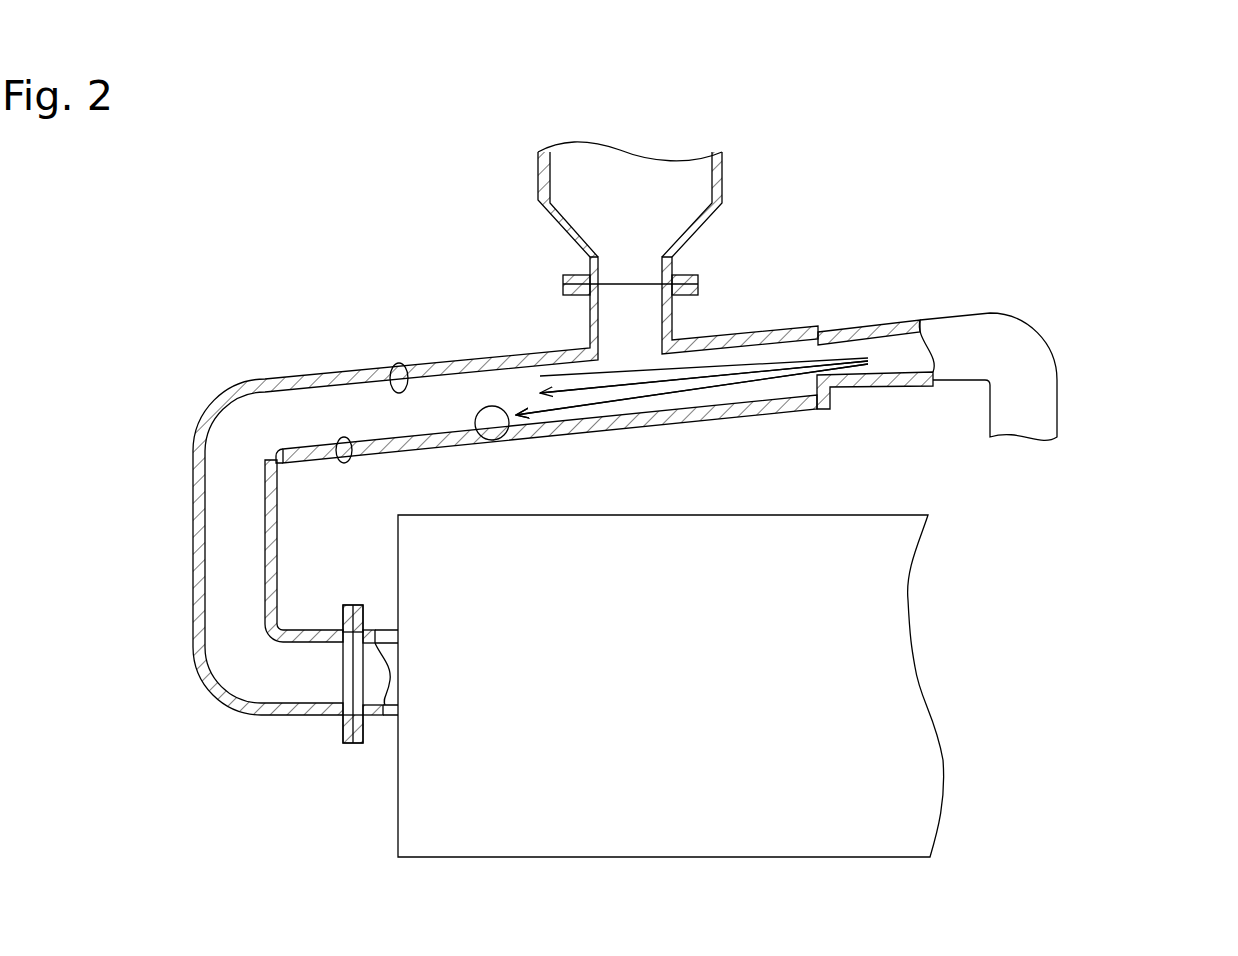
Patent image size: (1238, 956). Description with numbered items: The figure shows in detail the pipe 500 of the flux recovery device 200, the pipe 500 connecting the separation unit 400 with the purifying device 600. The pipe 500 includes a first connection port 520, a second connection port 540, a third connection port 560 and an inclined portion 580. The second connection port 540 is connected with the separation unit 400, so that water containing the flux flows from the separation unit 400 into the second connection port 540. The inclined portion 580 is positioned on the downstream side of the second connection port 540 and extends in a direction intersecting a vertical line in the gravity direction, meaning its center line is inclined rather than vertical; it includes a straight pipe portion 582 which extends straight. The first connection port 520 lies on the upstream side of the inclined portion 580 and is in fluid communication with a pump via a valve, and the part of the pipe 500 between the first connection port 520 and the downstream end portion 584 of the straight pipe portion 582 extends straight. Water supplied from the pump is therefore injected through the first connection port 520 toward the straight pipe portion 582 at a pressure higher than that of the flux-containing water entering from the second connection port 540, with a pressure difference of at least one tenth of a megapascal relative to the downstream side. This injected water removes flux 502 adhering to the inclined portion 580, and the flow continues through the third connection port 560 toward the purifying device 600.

The flux recovery device 200 is at (1105, 180).
The separation unit 400 is at (722, 180).
The pipe 500 is at (238, 347).
The flux 502 is at (490, 437).
The first connection port 520 is at (870, 366).
The second connection port 540 is at (640, 283).
The third connection port 560 is at (360, 708).
The inclined portion 580 is at (344, 463).
The straight pipe portion 582 is at (397, 363).
The downstream end portion 584 is at (279, 466).
The purifying device 600 is at (479, 828).